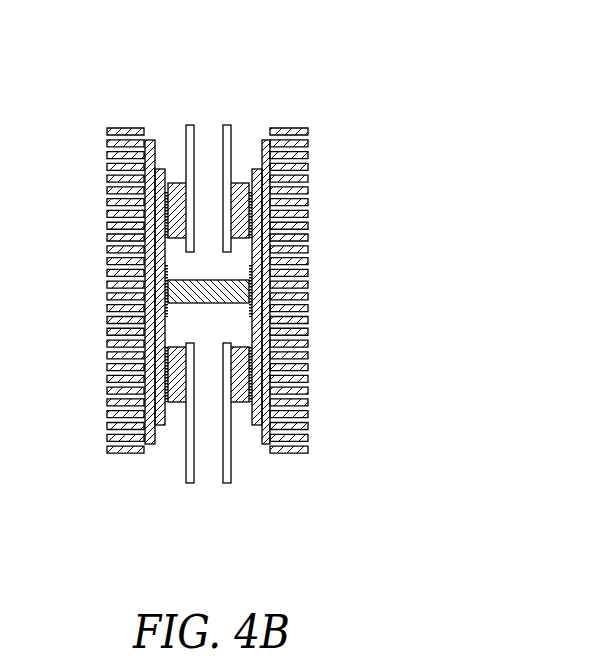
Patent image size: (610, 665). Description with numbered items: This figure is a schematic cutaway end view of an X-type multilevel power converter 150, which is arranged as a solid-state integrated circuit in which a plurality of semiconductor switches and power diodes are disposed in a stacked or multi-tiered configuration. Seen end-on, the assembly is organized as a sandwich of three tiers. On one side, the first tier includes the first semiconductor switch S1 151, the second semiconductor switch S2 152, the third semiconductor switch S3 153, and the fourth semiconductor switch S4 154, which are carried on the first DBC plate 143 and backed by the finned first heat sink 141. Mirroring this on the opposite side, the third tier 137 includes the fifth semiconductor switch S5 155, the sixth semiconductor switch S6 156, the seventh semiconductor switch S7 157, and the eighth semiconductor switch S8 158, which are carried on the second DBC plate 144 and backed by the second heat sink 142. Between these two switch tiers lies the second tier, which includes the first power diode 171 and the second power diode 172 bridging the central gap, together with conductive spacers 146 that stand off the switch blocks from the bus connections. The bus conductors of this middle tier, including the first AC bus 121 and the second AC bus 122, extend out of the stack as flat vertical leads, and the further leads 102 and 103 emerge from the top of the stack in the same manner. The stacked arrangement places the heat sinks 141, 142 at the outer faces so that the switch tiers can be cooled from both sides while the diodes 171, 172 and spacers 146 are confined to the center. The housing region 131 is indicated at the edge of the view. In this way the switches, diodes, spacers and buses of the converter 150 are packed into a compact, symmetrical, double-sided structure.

The X-type multilevel power converter 150 is at (207, 66).
The lead terminal 102 is at (227, 124).
The lead terminal 103 is at (190, 124).
The first AC bus 121 is at (228, 485).
The second AC bus 122 is at (189, 485).
The housing 131 is at (0, 648).
The third tier 137 is at (37, 7).
The first heat sink 141 is at (308, 453).
The second heat sink 142 is at (107, 453).
The first DBC plate 143 is at (253, 426).
The second DBC plate 144 is at (163, 426).
The conductive spacers 146 is at (176, 183).
The first semiconductor switch S1 151 is at (331, 192).
The second semiconductor switch S2 152 is at (331, 395).
The third semiconductor switch S3 153 is at (257, 391).
The fourth semiconductor switch S4 154 is at (257, 196).
The fifth semiconductor switch S5 155 is at (87, 192).
The sixth semiconductor switch S6 156 is at (86, 395).
The seventh semiconductor switch S7 157 is at (159, 391).
The eighth semiconductor switch S8 158 is at (159, 196).
The first power diode 171 is at (176, 271).
The second power diode 172 is at (243, 314).